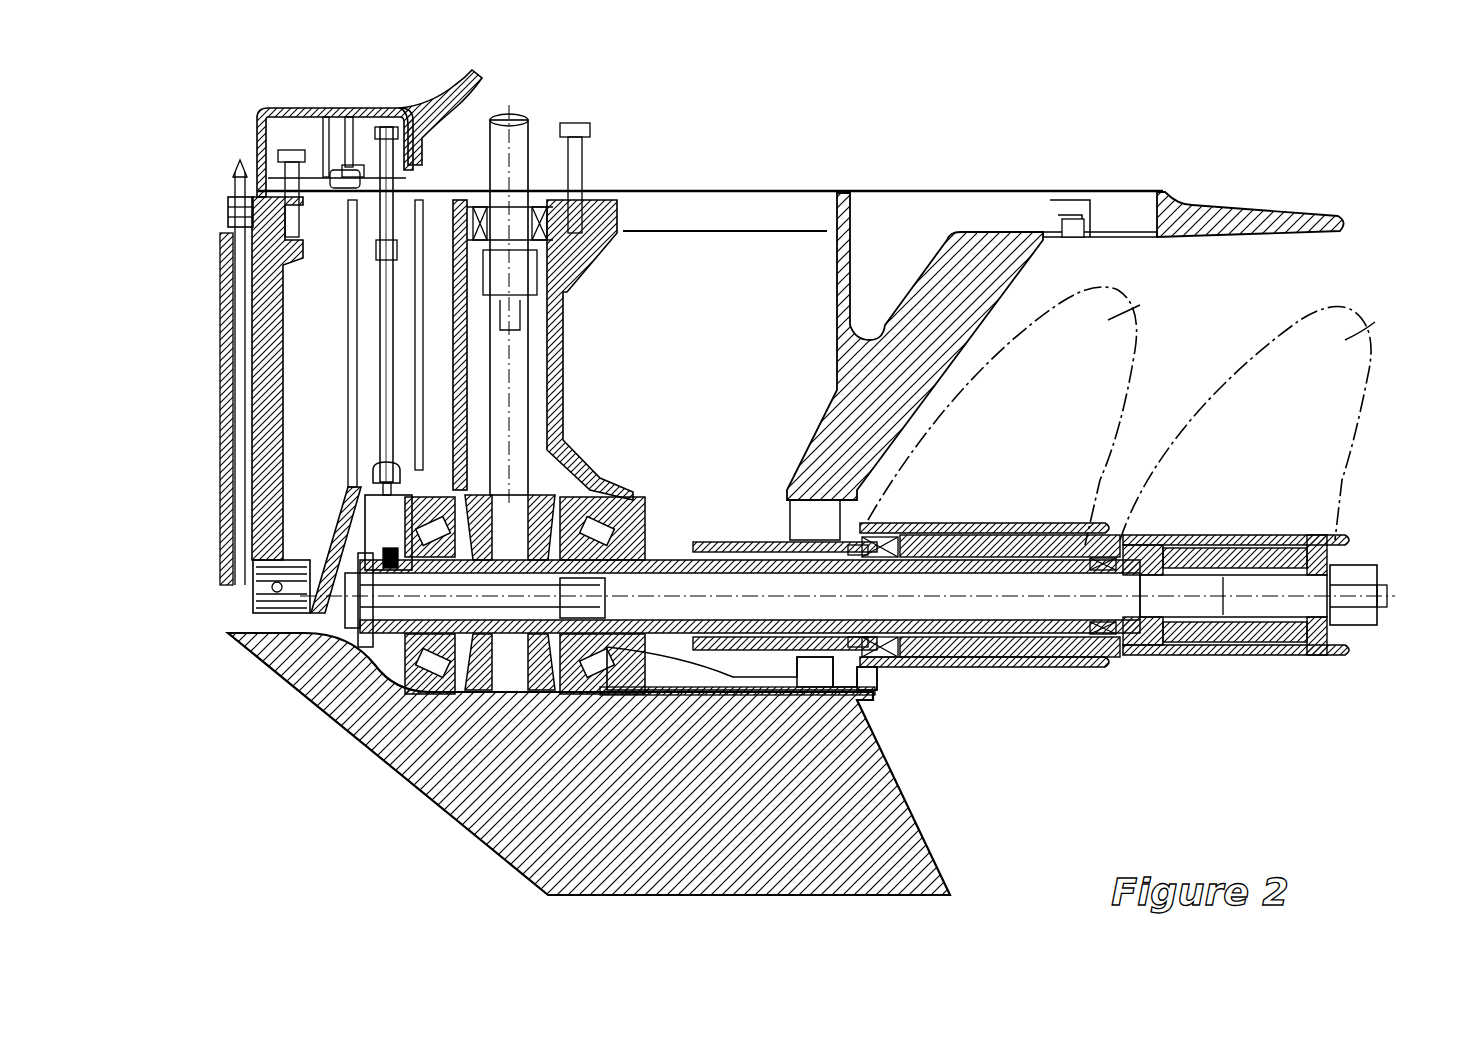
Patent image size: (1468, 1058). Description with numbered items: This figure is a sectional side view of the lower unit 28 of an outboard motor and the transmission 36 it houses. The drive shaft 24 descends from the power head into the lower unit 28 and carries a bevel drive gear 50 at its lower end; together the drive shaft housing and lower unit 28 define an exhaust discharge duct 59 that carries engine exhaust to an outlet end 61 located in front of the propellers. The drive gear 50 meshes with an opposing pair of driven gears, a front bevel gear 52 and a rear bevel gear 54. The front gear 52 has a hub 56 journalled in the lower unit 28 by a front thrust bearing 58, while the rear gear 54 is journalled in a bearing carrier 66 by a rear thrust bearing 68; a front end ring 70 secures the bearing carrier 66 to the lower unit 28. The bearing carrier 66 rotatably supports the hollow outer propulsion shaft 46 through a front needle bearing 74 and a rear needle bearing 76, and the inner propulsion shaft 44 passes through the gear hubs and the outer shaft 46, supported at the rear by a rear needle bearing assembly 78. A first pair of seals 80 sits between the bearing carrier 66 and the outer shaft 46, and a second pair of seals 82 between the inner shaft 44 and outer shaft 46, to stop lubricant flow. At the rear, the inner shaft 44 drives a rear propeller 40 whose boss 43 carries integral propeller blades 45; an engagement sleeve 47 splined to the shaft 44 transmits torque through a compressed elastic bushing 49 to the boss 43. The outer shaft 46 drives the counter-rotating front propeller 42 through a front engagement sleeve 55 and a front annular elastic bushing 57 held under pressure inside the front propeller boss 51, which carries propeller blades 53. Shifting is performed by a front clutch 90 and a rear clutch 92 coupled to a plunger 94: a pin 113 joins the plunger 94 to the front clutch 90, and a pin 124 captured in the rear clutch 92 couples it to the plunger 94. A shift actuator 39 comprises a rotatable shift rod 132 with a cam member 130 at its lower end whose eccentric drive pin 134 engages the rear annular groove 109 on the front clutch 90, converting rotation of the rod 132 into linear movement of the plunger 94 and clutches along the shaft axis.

The drive shaft 24 is at (520, 140).
The lower unit 28 is at (1197, 210).
The transmission 36 is at (646, 446).
The shift actuator 39 is at (330, 483).
The rear propeller 40 is at (1385, 384).
The front propeller 42 is at (1172, 368).
The rear propeller boss 43 is at (1353, 530).
The inner propulsion shaft 44 is at (700, 580).
The propeller blades 45 is at (1377, 313).
The outer propulsion shaft 46 is at (770, 545).
The engagement sleeve 47 is at (1237, 647).
The elastic bushing 49 is at (1283, 647).
The drive gear 50 is at (547, 487).
The front propeller boss 51 is at (1070, 667).
The front bevel gear 52 is at (442, 700).
The propeller blades 53 is at (1143, 307).
The rear bevel gear 54 is at (555, 655).
The front engagement sleeve 55 is at (973, 663).
The hub 56 is at (440, 690).
The front annular elastic bushing 57 is at (1010, 663).
The front thrust bearing 58 is at (430, 660).
The exhaust discharge duct 59 is at (753, 291).
The outlet end 61 is at (878, 684).
The bearing carrier 66 is at (733, 540).
The rear thrust bearing 68 is at (605, 665).
The front end ring 70 is at (850, 520).
The front needle bearing 74 is at (700, 660).
The rear needle bearing 76 is at (870, 525).
The rear needle bearing assembly 78 is at (1073, 523).
The first pair of seals 80 is at (893, 580).
The second pair of seals 82 is at (1123, 660).
The front clutch 90 is at (400, 650).
The rear clutch 92 is at (520, 650).
The plunger 94 is at (300, 650).
The rear annular groove 109 is at (375, 655).
The pin 113 is at (367, 573).
The pin 124 is at (500, 690).
The cam member 130 is at (402, 510).
The shift rod 132 is at (393, 317).
The drive pin 134 is at (367, 575).